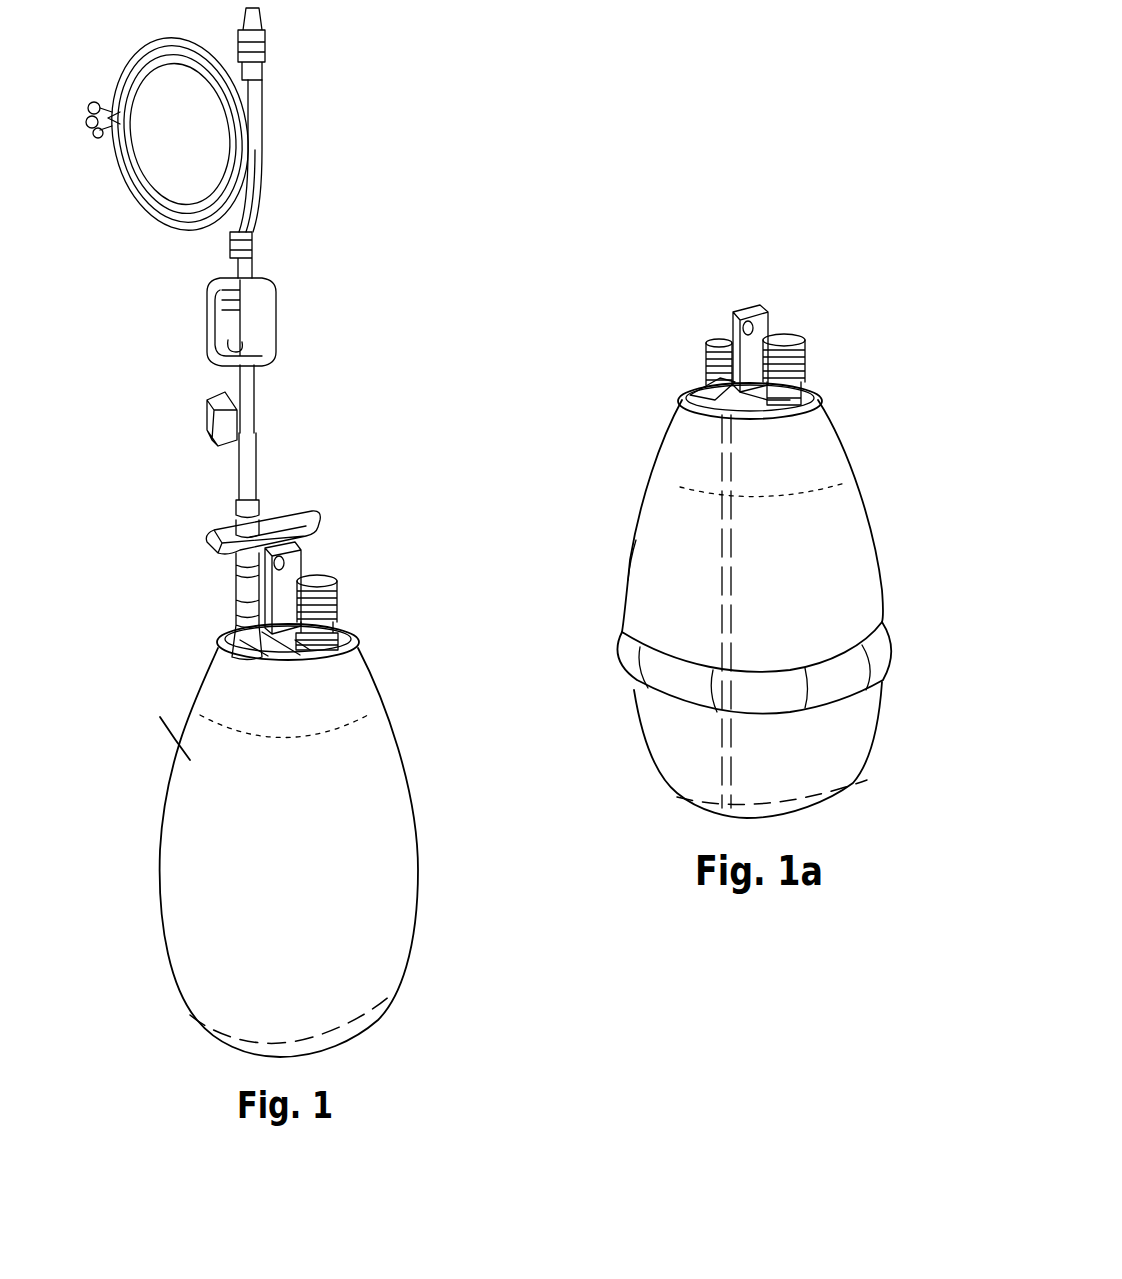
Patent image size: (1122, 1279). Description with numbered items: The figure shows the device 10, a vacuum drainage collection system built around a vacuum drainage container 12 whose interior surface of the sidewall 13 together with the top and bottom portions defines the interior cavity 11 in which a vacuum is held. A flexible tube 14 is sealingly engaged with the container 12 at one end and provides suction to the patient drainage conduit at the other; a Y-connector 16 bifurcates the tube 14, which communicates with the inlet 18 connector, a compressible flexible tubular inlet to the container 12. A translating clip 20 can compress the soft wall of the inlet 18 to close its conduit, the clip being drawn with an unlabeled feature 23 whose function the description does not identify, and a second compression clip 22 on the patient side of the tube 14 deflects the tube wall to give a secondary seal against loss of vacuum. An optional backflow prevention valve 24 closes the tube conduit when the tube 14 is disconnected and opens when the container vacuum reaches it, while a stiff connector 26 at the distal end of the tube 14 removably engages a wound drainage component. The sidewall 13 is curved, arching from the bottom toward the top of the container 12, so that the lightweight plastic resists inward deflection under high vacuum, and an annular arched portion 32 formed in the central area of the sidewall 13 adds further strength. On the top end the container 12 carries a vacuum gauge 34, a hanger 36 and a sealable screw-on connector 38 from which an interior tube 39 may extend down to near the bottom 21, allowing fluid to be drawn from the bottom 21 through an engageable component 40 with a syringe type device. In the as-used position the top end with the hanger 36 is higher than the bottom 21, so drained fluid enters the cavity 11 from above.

In FIG. 1, the device 10 is at (547, 423).
In FIG. 1A, the interior cavity 11 is at (795, 573).
In FIG. 1, the vacuum drainage container 12 is at (365, 782).
In FIG. 1A, the vacuum drainage container 12 is at (677, 467).
In FIG. 1, the sidewall 13 is at (190, 760).
In FIG. 1A, the sidewall 13 is at (636, 540).
In FIG. 1, the tube 14 is at (262, 152).
In FIG. 1, the Y-connector 16 is at (236, 485).
In FIG. 1, the inlet connector 18 is at (237, 582).
In FIG. 1A, the inlet connector 18 is at (711, 338).
In FIG. 1, the clip 20 is at (322, 520).
In FIG. 1, the bottom 21 is at (343, 1038).
In FIG. 1A, the bottom 21 is at (713, 800).
In FIG. 1, the compression clip 22 is at (268, 325).
In FIG. 1, the plate slot 23 is at (288, 510).
In FIG. 1, the backflow prevention valve 24 is at (252, 243).
In FIG. 1, the connector 26 is at (272, 42).
In FIG. 1A, the arched portion 32 is at (633, 642).
In FIG. 1, the vacuum gauge 34 is at (340, 597).
In FIG. 1A, the vacuum gauge 34 is at (795, 340).
In FIG. 1, the hanger 36 is at (298, 560).
In FIG. 1A, the hanger 36 is at (762, 312).
In FIG. 1A, the sealable connector 38 is at (706, 362).
In FIG. 1A, the interior tube 39 is at (718, 542).
In FIG. 1, the engageable component 40 is at (207, 416).